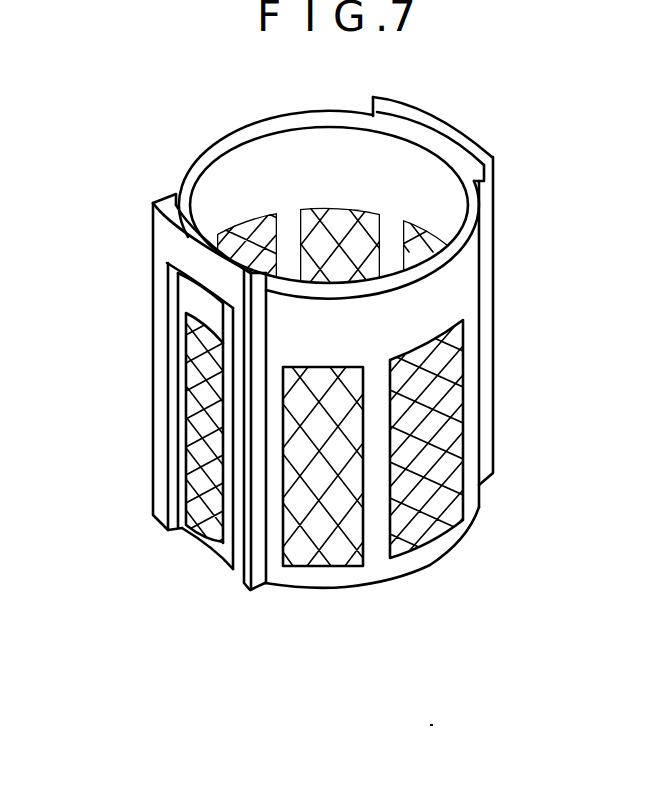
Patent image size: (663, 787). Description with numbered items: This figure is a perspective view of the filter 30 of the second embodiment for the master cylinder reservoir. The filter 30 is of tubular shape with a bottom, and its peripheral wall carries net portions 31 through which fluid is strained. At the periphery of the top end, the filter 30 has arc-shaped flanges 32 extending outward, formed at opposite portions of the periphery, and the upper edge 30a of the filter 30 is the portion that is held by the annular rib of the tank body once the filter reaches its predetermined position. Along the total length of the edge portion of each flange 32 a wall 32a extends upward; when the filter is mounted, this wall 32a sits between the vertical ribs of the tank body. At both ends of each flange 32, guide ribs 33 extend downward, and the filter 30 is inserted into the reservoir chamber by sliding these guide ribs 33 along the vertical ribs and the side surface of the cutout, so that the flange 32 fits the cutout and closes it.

The filter 30 is at (326, 386).
The upper edge 30a is at (480, 287).
The net portions 31 is at (204, 532).
The flange 32 is at (383, 127).
The wall 32a is at (446, 130).
The guide rib 33 is at (157, 402).